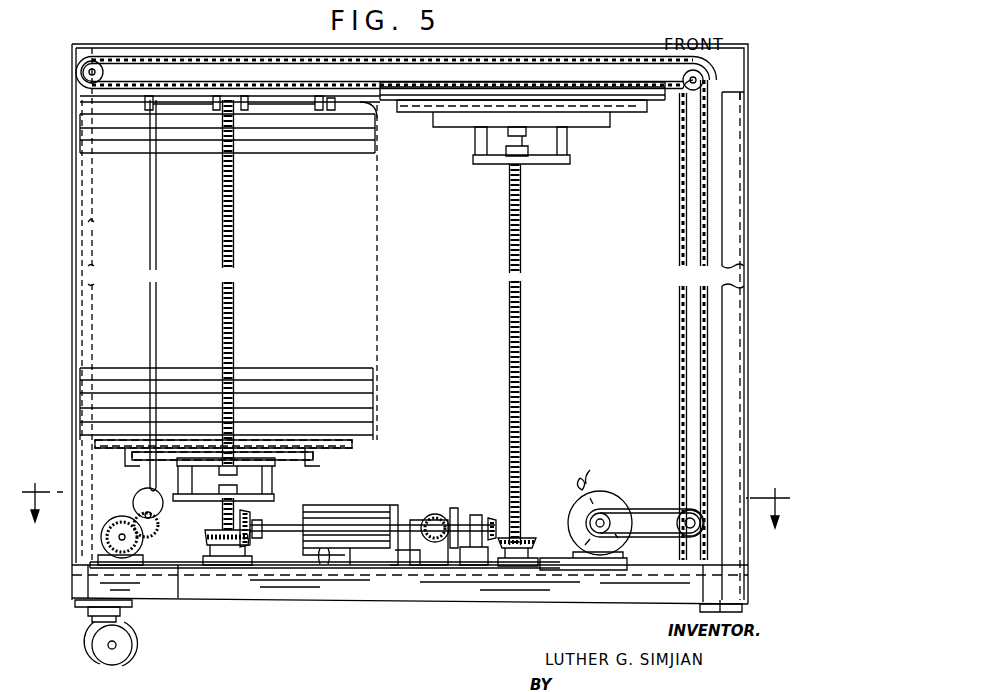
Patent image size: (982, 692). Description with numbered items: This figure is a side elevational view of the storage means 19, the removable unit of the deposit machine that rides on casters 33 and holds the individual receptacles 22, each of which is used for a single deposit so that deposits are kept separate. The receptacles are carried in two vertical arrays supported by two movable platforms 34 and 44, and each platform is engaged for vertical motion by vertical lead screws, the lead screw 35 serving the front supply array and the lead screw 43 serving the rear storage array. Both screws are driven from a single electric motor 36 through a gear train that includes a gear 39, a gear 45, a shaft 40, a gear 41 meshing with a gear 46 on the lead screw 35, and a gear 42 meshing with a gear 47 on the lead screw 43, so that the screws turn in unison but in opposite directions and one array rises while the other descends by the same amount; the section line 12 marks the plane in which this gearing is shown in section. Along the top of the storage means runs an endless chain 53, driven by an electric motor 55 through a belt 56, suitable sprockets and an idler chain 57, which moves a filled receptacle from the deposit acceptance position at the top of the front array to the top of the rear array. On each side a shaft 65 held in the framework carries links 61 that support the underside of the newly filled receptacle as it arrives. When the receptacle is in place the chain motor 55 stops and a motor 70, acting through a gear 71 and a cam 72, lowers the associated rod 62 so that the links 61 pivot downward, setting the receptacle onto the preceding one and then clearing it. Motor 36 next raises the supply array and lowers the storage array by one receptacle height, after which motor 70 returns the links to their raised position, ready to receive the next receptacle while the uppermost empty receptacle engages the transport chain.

The section line 12 is at (405, 492).
The storage means 19 is at (742, 50).
The receptacle 22 is at (373, 145).
The caster 33 is at (127, 660).
The movable platform 34 is at (270, 478).
The vertical lead screw 35 is at (236, 204).
The electric motor 36 is at (360, 506).
The gear 39 is at (437, 514).
The shaft 40 is at (406, 524).
The gear 41 is at (252, 533).
The gear 42 is at (498, 518).
The vertical lead screw 43 is at (529, 208).
The movable platform 44 is at (567, 136).
The gear 45 is at (454, 512).
The gear 46 is at (212, 534).
The gear 47 is at (536, 542).
The endless chain 53 is at (386, 60).
The electric motor 55 is at (605, 506).
The belt 56 is at (652, 511).
The idler chain 57 is at (679, 318).
The link 61 is at (322, 110).
The rod 62 is at (157, 322).
The shaft 65 is at (271, 104).
The motor 70 is at (110, 522).
The gear 71 is at (146, 538).
The cam 72 is at (140, 497).